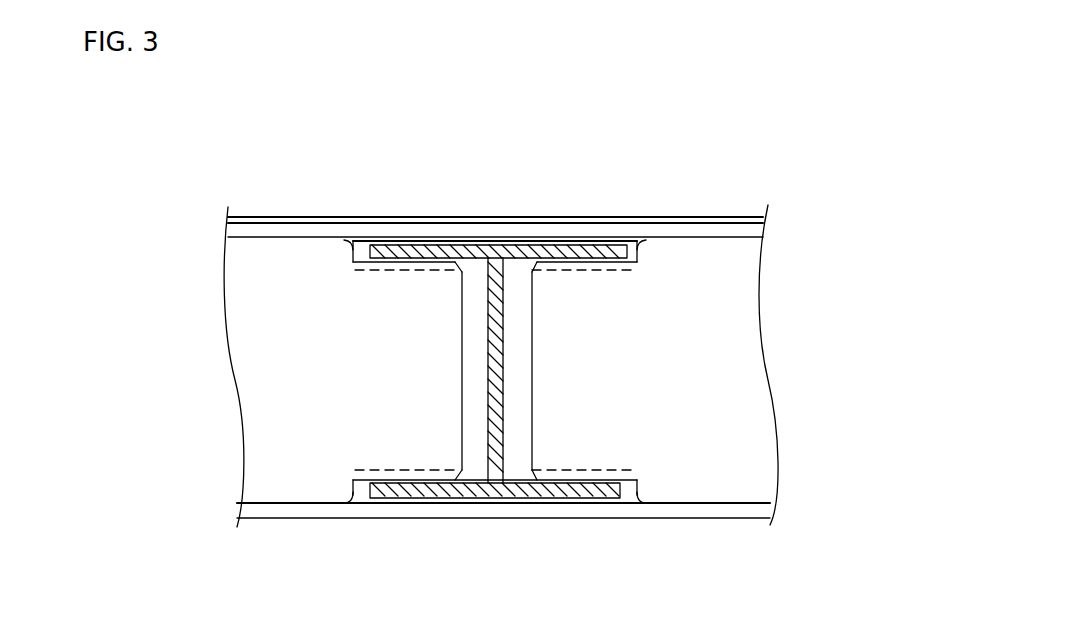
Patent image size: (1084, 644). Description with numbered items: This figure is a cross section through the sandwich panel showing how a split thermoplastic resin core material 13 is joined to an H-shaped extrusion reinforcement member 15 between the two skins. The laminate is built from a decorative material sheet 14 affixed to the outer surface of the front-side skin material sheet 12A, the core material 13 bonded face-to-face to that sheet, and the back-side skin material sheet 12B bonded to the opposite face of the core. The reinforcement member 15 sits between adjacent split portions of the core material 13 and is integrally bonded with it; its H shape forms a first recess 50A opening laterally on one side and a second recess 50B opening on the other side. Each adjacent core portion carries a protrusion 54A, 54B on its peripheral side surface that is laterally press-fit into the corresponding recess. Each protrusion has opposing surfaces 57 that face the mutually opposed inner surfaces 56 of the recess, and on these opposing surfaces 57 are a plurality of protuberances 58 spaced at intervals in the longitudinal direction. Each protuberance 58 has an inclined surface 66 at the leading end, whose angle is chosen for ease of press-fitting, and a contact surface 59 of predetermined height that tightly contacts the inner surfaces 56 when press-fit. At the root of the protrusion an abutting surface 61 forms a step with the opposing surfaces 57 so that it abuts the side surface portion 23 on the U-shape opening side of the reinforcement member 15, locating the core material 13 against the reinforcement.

The foamable thermoplastic resin core material 13 is at (262, 430).
The decorative material sheet 14 is at (262, 218).
The front-side skin material sheet 12A is at (248, 233).
The back-side skin material sheet 12B is at (395, 513).
The reinforcement member 15 is at (523, 245).
The side surface portion 23 is at (620, 492).
The first recess 50A is at (472, 393).
The second recess 50B is at (518, 393).
The protrusion 54A is at (380, 325).
The protrusion 54B is at (595, 405).
The inner surfaces 56 is at (553, 245).
The opposing surfaces 57 is at (405, 245).
The protuberances 58 is at (442, 256).
The contact surface 59 is at (425, 250).
The abutting surface 61 is at (375, 245).
The inclined surface 66 is at (493, 246).